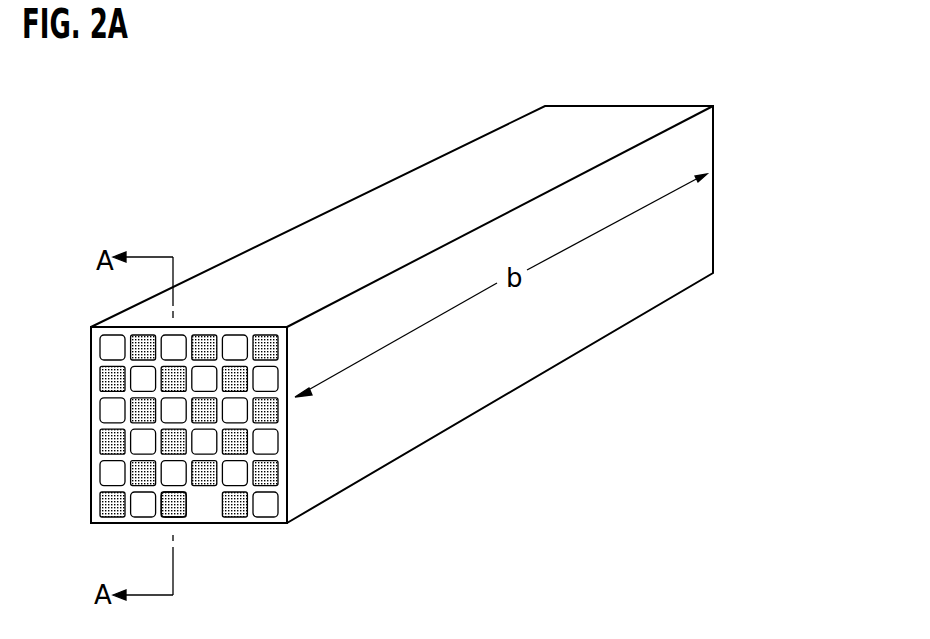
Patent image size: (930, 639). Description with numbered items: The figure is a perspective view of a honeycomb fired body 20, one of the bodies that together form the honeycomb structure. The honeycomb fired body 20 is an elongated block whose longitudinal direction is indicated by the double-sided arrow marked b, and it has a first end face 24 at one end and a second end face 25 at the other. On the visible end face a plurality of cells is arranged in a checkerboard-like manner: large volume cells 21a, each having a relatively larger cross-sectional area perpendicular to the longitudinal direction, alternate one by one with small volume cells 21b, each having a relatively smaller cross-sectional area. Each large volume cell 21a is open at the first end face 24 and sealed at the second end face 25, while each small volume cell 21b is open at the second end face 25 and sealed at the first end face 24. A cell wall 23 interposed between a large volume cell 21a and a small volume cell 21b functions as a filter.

The honeycomb fired body 20 is at (322, 181).
The second end face 25 is at (723, 159).
The first end face 24 is at (108, 429).
The small volume cell 21b is at (102, 501).
The large volume cell 21a is at (143, 512).
The cell wall 23 is at (232, 512).